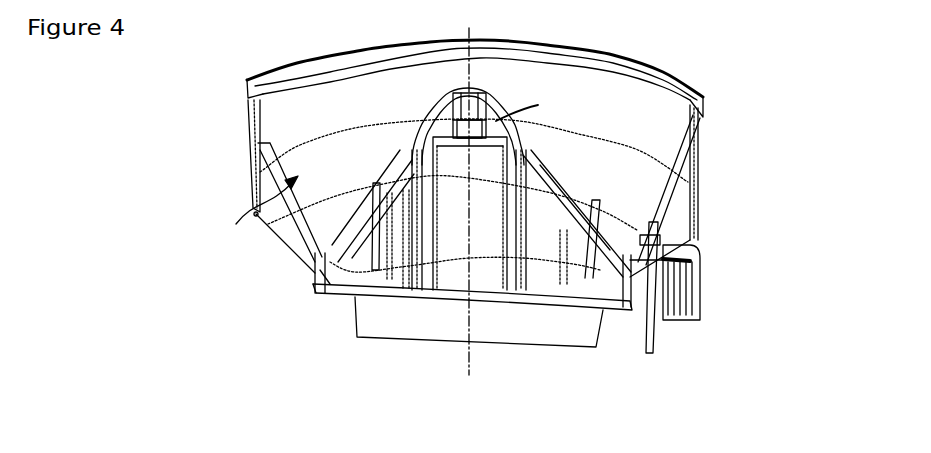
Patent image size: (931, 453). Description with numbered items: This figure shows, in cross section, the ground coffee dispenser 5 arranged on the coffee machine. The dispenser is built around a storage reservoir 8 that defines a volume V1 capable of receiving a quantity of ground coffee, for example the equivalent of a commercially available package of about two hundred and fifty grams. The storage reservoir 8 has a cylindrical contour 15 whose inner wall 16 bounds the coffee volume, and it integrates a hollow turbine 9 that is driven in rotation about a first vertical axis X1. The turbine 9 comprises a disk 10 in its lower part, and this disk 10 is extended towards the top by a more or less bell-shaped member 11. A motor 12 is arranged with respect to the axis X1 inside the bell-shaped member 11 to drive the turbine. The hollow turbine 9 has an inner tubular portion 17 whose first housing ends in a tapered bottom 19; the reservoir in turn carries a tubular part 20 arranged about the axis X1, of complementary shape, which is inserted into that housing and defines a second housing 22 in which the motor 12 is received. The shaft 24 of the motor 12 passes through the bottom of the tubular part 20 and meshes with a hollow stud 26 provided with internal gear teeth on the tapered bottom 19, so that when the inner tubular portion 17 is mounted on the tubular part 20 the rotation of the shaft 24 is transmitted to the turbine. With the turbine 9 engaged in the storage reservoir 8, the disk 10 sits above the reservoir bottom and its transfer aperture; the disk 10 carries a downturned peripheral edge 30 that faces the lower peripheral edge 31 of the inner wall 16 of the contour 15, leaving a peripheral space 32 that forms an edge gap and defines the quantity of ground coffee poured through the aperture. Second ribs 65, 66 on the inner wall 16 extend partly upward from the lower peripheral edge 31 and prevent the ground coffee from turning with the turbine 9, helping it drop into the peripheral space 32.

The ground coffee dispenser 5 is at (744, 81).
The storage reservoir 8 is at (708, 184).
The turbine 9 is at (550, 165).
The disk 10 is at (330, 268).
The bell-shaped member 11 is at (395, 148).
The motor 12 is at (457, 272).
The cylindrical contour 15 is at (252, 180).
The inner wall 16 is at (288, 117).
The inner tubular portion 17 is at (417, 282).
The tapered bottom 19 is at (436, 108).
The tubular part 20 is at (431, 282).
The second housing 22 is at (496, 312).
The shaft 24 is at (460, 100).
The hollow stud 26 is at (478, 110).
The downturned peripheral edge 30 is at (323, 280).
The lower peripheral edge 31 is at (320, 283).
The peripheral space 32 is at (621, 277).
The second rib 65 is at (377, 184).
The second rib 66 is at (598, 200).
The volume V1 is at (252, 216).
The first vertical axis X1 is at (478, 367).